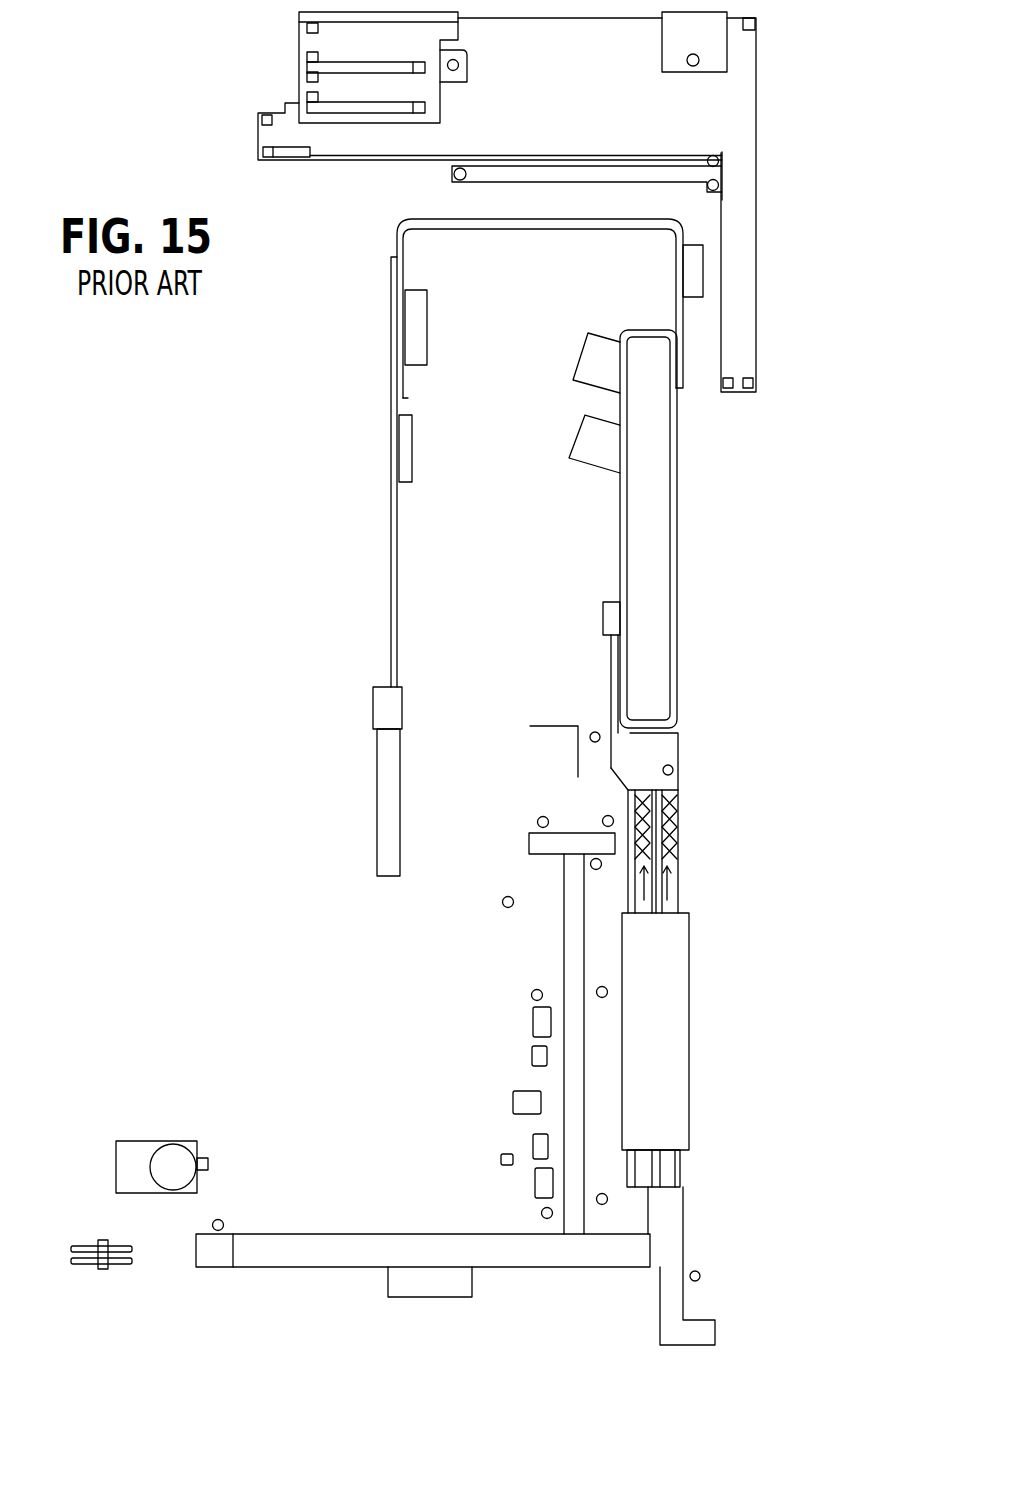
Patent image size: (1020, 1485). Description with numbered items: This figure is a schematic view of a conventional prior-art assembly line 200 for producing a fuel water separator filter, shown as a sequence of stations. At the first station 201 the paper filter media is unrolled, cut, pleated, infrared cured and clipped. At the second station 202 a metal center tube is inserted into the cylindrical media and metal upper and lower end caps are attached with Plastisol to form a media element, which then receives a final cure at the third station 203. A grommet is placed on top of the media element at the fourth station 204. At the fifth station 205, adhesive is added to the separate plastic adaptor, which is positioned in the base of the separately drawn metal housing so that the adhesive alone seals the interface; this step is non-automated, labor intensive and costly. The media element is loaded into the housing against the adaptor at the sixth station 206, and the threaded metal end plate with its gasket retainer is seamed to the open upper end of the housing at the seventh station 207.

The assembly line 200 is at (270, 588).
The first station 201 is at (325, 1252).
The second station 202 is at (667, 1248).
The third station 203 is at (677, 1075).
The fourth station 204 is at (624, 710).
The fifth station 205 is at (680, 700).
The sixth station 206 is at (680, 503).
The seventh station 207 is at (683, 362).